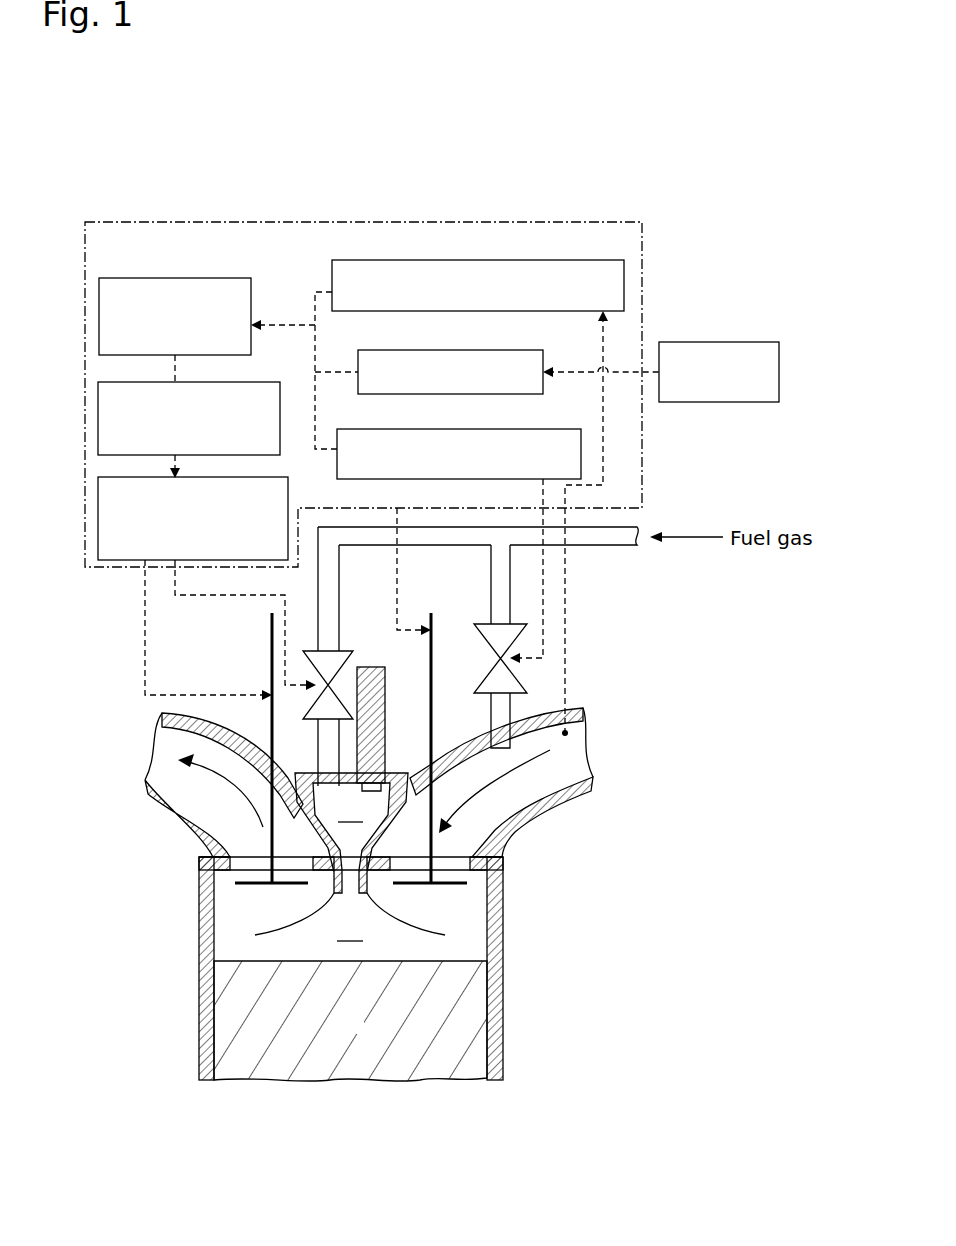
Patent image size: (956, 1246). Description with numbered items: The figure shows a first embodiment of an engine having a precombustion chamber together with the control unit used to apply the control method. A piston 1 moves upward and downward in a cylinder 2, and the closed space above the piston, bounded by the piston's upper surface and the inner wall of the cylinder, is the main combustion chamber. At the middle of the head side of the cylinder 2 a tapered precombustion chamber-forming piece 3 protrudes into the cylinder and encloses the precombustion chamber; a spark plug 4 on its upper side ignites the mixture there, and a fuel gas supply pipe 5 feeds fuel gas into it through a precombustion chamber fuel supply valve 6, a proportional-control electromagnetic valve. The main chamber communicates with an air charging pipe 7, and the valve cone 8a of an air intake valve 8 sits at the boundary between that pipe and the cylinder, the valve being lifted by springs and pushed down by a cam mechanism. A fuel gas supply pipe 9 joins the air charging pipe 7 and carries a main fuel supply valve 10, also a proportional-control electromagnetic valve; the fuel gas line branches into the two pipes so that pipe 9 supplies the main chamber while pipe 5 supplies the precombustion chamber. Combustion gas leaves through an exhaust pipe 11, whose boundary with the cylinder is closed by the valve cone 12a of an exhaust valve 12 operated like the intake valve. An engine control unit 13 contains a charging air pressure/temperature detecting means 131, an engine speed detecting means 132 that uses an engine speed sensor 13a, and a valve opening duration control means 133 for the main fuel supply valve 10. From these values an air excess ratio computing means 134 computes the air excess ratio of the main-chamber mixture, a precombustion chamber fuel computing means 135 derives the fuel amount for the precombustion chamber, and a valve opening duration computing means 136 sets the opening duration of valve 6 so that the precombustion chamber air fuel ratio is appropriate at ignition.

The piston 1 is at (358, 1031).
The cylinder 2 is at (500, 1013).
The precombustion chamber-forming piece 3 is at (398, 773).
The spark plug 4 is at (386, 688).
The fuel gas supply pipe 5 is at (340, 628).
The precombustion chamber fuel supply valve 6 is at (320, 706).
The air charging pipe 7 is at (524, 804).
The air intake valve 8 is at (433, 664).
The valve cone 8a is at (487, 910).
The fuel gas supply pipe 9 is at (490, 598).
The main fuel supply valve 10 is at (508, 678).
The exhaust pipe 11 is at (205, 828).
The exhaust valve 12 is at (270, 660).
The valve cone 12a is at (218, 906).
The engine control unit 13 is at (342, 222).
The engine speed sensor 13a is at (745, 342).
The charging air pressure/temperature detecting means 131 is at (560, 260).
The engine speed detecting means 132 is at (536, 350).
The valve opening duration control means 133 is at (544, 429).
The air excess ratio computing means 134 is at (200, 279).
The precombustion chamber fuel computing means 135 is at (235, 382).
The valve opening duration computing means 136 is at (270, 477).